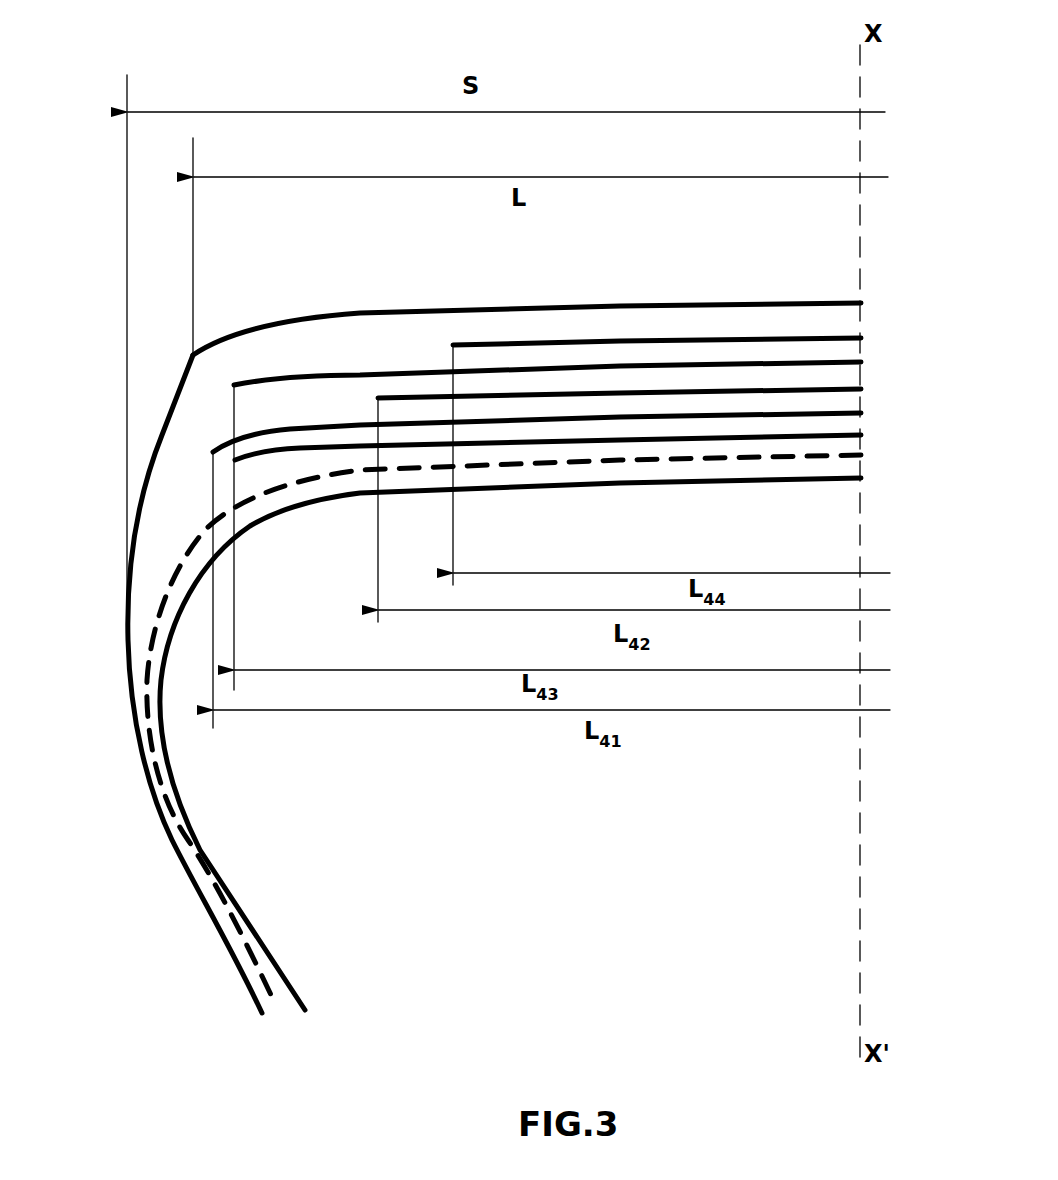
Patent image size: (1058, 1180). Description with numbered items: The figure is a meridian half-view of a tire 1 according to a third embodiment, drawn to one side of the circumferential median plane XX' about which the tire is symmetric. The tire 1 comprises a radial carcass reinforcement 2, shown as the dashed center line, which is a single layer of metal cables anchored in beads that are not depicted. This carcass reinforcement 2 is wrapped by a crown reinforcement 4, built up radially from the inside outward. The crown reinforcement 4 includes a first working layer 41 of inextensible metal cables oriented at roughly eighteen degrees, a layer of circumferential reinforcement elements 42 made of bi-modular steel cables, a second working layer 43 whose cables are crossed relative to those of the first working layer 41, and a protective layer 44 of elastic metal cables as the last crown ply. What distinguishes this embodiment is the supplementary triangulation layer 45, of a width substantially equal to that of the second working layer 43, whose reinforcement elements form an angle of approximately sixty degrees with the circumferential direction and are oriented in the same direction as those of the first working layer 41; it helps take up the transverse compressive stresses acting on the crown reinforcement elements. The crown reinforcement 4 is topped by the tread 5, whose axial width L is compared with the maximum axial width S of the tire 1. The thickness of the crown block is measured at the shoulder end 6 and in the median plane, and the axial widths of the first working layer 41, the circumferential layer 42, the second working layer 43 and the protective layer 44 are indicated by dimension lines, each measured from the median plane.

The tire 1 is at (118, 428).
The radial carcass reinforcement 2 is at (160, 598).
The crown reinforcement 4 is at (582, 401).
The tread 5 is at (753, 318).
The shoulder end 6 is at (189, 352).
The first working layer 41 is at (587, 420).
The layer of circumferential reinforcement elements 42 is at (670, 395).
The second working layer 43 is at (425, 363).
The protective layer 44 is at (623, 340).
The triangulation layer 45 is at (300, 453).